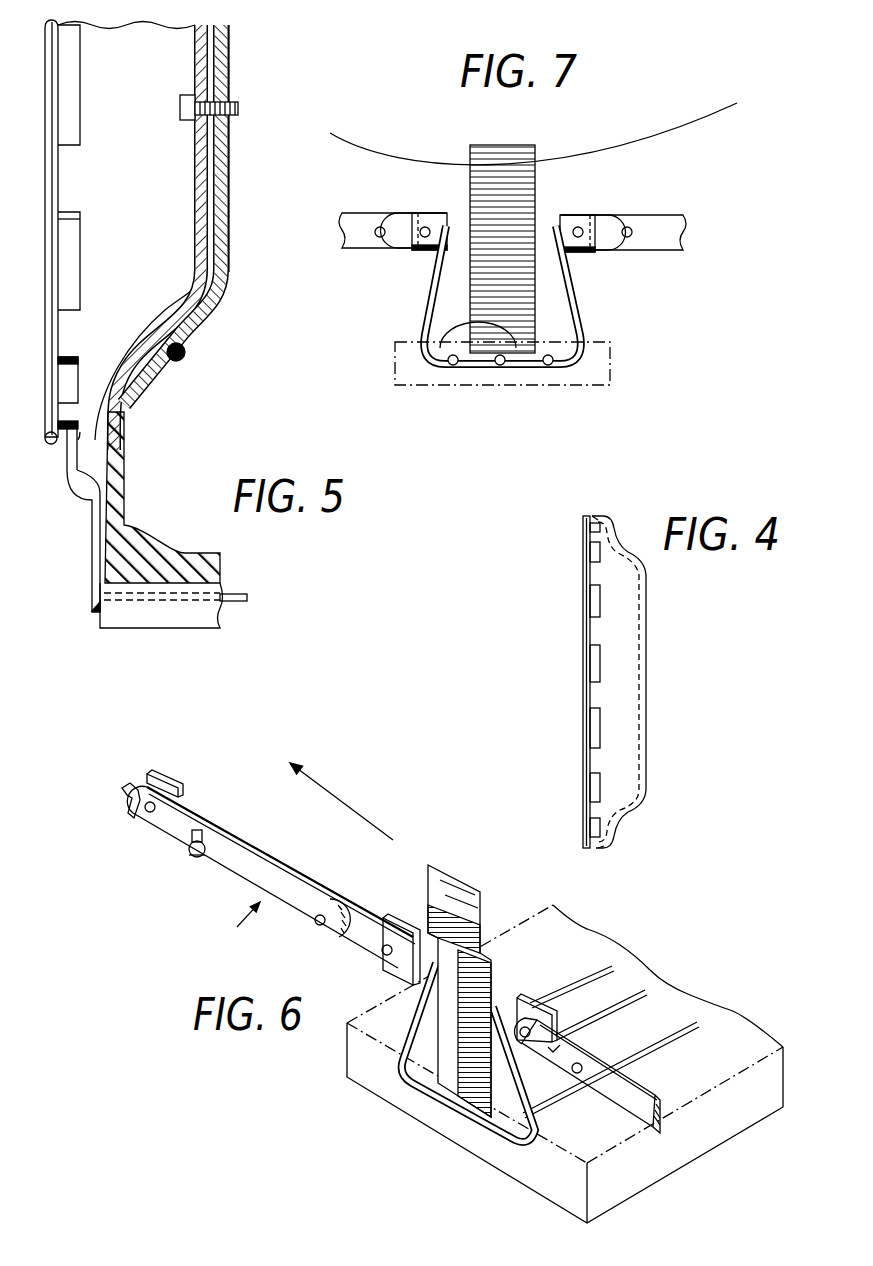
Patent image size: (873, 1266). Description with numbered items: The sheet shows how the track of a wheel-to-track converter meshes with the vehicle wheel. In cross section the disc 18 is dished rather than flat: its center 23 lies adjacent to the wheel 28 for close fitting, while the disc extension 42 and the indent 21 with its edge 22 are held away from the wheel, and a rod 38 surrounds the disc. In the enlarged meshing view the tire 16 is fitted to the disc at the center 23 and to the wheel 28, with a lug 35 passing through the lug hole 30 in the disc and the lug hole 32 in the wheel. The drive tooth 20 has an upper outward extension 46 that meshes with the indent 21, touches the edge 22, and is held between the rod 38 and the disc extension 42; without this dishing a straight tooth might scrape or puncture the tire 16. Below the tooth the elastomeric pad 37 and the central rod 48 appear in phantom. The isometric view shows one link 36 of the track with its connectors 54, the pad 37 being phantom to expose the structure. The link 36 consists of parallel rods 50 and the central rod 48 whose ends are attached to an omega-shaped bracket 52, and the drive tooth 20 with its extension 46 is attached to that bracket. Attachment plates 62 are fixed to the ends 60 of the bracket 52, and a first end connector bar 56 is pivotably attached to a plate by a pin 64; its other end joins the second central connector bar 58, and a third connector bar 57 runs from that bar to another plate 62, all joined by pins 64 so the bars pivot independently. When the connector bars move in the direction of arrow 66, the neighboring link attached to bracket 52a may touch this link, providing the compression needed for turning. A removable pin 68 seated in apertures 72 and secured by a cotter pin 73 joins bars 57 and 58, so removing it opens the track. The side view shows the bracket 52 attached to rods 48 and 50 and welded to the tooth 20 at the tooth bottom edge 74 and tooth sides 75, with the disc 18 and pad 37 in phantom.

In FIG. 5, the tire 16 is at (148, 545).
In FIG. 5, the disc 18 is at (34, 437).
In FIG. 7, the disc 18 is at (673, 137).
In FIG. 4, the disc 18 is at (652, 612).
In FIG. 5, the drive tooth 20 is at (92, 556).
In FIG. 7, the drive tooth 20 is at (492, 264).
In FIG. 6, the drive tooth 20 is at (470, 1047).
In FIG. 5, the indent 21 is at (70, 112).
In FIG. 4, the indent 21 is at (587, 555).
In FIG. 5, the edge 22 is at (77, 88).
In FIG. 4, the edge 22 is at (590, 618).
In FIG. 5, the center 23 is at (195, 148).
In FIG. 4, the center 23 is at (646, 712).
In FIG. 5, the wheel 28 is at (229, 192).
In FIG. 5, the lug hole 30 is at (197, 84).
In FIG. 5, the lug hole 32 is at (229, 136).
In FIG. 5, the lug 35 is at (186, 110).
In FIG. 6, the link 36 is at (435, 1102).
In FIG. 5, the elastomeric pad 37 is at (158, 620).
In FIG. 7, the elastomeric pad 37 is at (610, 352).
In FIG. 6, the elastomeric pad 37 is at (727, 1127).
In FIG. 5, the rod 38 is at (54, 178).
In FIG. 4, the rod 38 is at (585, 701).
In FIG. 5, the disc extension 42 is at (77, 442).
In FIG. 4, the disc extension 42 is at (598, 516).
In FIG. 5, the upper outward extension 46 is at (67, 488).
In FIG. 7, the upper outward extension 46 is at (508, 180).
In FIG. 6, the upper outward extension 46 is at (452, 898).
In FIG. 5, the central rod 48 is at (233, 595).
In FIG. 7, the central rod 48 is at (498, 367).
In FIG. 6, the central rod 48 is at (623, 1005).
In FIG. 7, the rod 50 is at (450, 367).
In FIG. 6, the rod 50 is at (588, 971).
In FIG. 5, the bracket 52 is at (93, 609).
In FIG. 7, the bracket 52 is at (436, 288).
In FIG. 6, the bracket 52 is at (432, 1000).
In FIG. 6, the bracket 52a is at (122, 800).
In FIG. 6, the connector 54 is at (233, 927).
In FIG. 7, the first end connector bar 56 is at (404, 215).
In FIG. 6, the first end connector bar 56 is at (330, 905).
In FIG. 7, the third connector bar 57 is at (583, 253).
In FIG. 6, the third connector bar 57 is at (195, 822).
In FIG. 7, the second central connector bar 58 is at (356, 215).
In FIG. 6, the second central connector bar 58 is at (256, 880).
In FIG. 6, the ends 60 is at (400, 976).
In FIG. 7, the attachment plate 62 is at (437, 215).
In FIG. 6, the attachment plate 62 is at (172, 780).
In FIG. 7, the pin 64 is at (380, 238).
In FIG. 6, the pin 64 is at (150, 812).
In FIG. 6, the arrow 66 is at (348, 815).
In FIG. 6, the pin 68 is at (189, 851).
In FIG. 6, the aperture 72 is at (212, 846).
In FIG. 6, the cotter pin 73 is at (196, 860).
In FIG. 7, the tooth bottom edge 74 is at (517, 336).
In FIG. 7, the tooth sides 75 is at (549, 215).